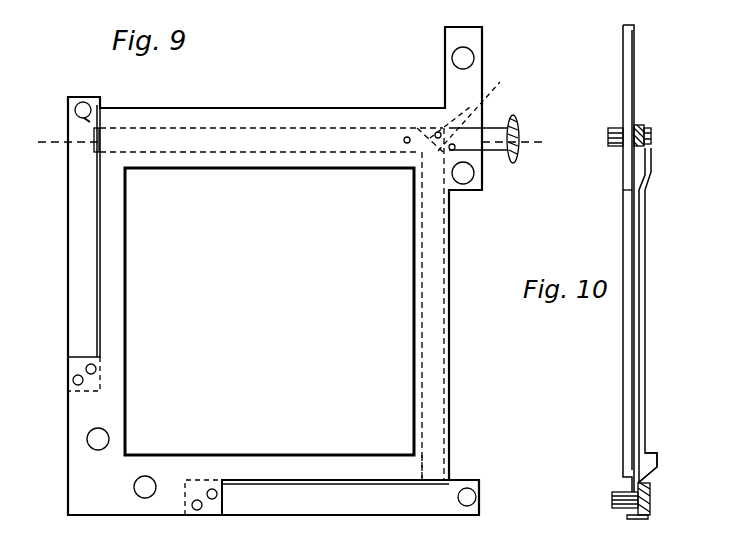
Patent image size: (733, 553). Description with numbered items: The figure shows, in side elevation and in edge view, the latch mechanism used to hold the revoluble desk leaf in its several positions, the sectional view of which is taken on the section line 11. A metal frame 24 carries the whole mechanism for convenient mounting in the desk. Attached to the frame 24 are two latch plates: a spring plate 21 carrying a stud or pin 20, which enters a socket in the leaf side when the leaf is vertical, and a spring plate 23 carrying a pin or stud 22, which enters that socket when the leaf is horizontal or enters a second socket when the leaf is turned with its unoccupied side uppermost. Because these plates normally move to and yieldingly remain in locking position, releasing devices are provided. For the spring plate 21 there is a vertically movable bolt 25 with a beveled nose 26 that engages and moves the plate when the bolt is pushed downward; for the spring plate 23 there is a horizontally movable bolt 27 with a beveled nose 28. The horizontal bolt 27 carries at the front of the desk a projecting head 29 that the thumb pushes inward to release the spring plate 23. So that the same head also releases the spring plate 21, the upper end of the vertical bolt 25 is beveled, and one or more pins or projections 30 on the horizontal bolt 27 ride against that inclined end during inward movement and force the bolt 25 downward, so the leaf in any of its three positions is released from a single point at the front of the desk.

In FIG. 9, the section line 11 is at (287, 143).
In FIG. 9, the stud or pin 20 is at (466, 506).
In FIG. 10, the stud or pin 20 is at (612, 499).
In FIG. 9, the spring plate 21 is at (381, 505).
In FIG. 10, the spring plate 21 is at (650, 502).
In FIG. 9, the pin or stud 22 is at (86, 102).
In FIG. 10, the pin or stud 22 is at (616, 146).
In FIG. 9, the spring plate 23 is at (75, 310).
In FIG. 9, the metal frame 24 is at (88, 490).
In FIG. 10, the metal frame 24 is at (630, 420).
In FIG. 9, the vertically movable bolt 25 is at (448, 452).
In FIG. 10, the vertically movable bolt 25 is at (645, 378).
In FIG. 10, the beveled nose 26 is at (655, 468).
In FIG. 9, the horizontally movable bolt 27 is at (298, 127).
In FIG. 9, the beveled nose 28 is at (100, 140).
In FIG. 9, the projecting head 29 is at (520, 120).
In FIG. 9, the pins or projections 30 is at (480, 109).
In FIG. 10, the pins or projections 30 is at (652, 132).